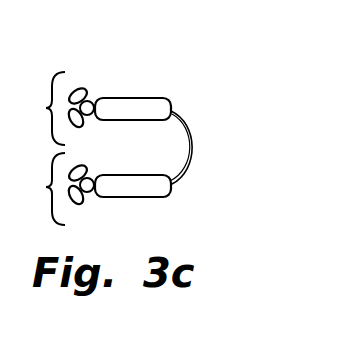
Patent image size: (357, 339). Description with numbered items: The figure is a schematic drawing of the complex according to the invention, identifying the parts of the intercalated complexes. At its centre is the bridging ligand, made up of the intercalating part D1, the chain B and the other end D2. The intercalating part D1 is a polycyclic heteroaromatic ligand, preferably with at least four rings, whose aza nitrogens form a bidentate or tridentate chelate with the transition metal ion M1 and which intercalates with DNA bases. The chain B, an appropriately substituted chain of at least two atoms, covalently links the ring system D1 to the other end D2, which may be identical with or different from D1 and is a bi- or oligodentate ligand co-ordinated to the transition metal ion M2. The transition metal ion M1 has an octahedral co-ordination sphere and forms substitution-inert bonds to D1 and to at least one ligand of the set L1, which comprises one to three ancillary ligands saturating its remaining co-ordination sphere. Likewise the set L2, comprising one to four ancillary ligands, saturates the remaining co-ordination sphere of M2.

The set of ancillary ligands L2 is at (39, 108).
The transition metal ion M2 is at (93, 97).
The other end of the bridging ligand D2 is at (153, 97).
The chain covalently linking D1 to D2 B is at (193, 143).
The set of ancillary ligands L1 is at (39, 189).
The transition metal ion M1 is at (93, 199).
The intercalating part of the bridging ligand D1 is at (150, 199).